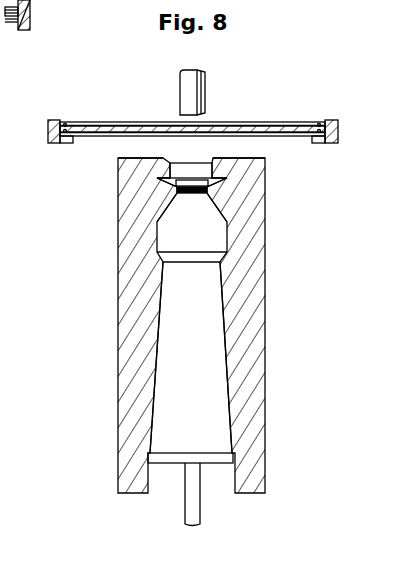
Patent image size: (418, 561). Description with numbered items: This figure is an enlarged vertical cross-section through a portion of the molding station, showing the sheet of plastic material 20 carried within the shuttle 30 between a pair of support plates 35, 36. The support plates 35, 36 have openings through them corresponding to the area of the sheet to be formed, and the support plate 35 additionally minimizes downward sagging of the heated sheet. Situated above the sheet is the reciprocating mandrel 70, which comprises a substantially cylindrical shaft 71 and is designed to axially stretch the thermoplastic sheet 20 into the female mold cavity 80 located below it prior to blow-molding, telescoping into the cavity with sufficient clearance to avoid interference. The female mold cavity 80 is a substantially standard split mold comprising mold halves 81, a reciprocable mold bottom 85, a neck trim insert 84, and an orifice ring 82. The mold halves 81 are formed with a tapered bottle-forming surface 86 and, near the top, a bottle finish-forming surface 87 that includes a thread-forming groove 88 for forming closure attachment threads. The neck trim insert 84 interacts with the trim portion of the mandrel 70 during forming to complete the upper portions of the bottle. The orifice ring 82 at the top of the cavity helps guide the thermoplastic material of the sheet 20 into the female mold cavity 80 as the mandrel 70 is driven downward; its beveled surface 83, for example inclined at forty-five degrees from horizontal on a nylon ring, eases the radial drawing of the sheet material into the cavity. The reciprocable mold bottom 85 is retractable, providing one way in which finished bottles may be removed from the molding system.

The sheet of plastic material 20 is at (192, 128).
The shuttle 30 is at (47, 143).
The support plate 35 is at (98, 135).
The support plate 36 is at (102, 122).
The reciprocating mandrel 70 is at (229, 76).
The cylindrical shaft 71 is at (193, 98).
The female mold cavity 80 is at (199, 332).
The mold halves 81 is at (122, 282).
The orifice ring 82 is at (263, 165).
The beveled surface 83 is at (167, 160).
The neck trim insert 84 is at (210, 184).
The reciprocable mold bottom 85 is at (221, 464).
The bottle-forming surface 86 is at (228, 346).
The bottle finish-forming surface 87 is at (215, 205).
The thread-forming groove 88 is at (197, 203).